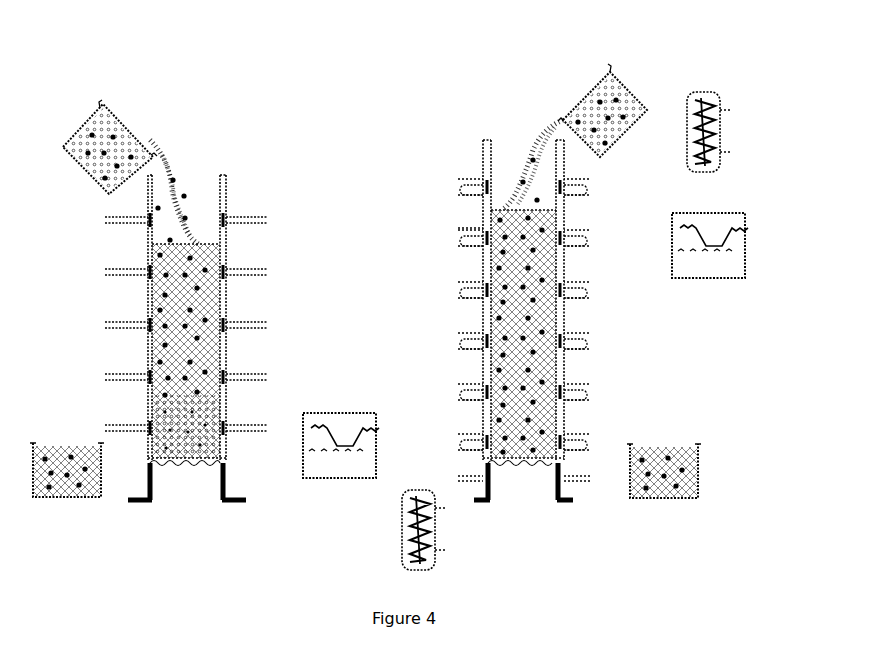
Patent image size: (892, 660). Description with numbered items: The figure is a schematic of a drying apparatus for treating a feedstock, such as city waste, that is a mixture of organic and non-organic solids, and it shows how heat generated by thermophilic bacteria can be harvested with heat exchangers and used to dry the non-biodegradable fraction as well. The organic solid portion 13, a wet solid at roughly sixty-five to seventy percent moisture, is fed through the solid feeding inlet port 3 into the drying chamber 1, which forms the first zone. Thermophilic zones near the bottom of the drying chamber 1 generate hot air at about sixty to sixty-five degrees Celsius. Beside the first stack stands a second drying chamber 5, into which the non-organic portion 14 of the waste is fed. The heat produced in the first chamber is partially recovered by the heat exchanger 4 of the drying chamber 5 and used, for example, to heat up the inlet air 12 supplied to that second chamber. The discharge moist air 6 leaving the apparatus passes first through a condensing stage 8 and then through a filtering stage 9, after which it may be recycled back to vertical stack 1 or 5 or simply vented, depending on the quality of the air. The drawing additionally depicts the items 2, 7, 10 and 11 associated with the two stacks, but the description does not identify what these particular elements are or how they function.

The drying chamber 1 is at (236, 177).
The product collection vessel 2 is at (48, 440).
The solid feeding inlet port 3 is at (202, 174).
The heat exchanger 4 is at (480, 209).
The drying chamber 5 is at (482, 138).
The discharge moist air 6 is at (567, 185).
The product collection vessel of second column 7 is at (688, 436).
The condenser 8 is at (722, 87).
The filter 9 is at (738, 206).
The lower reaction zone 10 is at (232, 424).
The upper left heat exchange coil 11 is at (481, 185).
The inlet air 12 is at (460, 231).
The organic solid portion 13 is at (124, 120).
The non-organic portion 14 is at (592, 76).